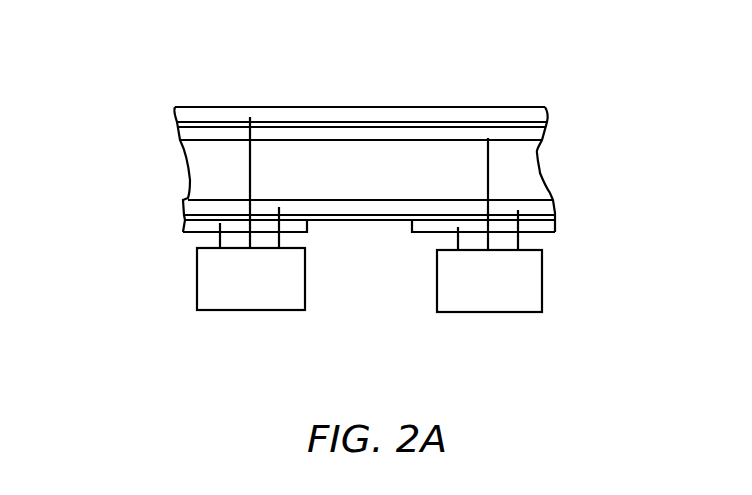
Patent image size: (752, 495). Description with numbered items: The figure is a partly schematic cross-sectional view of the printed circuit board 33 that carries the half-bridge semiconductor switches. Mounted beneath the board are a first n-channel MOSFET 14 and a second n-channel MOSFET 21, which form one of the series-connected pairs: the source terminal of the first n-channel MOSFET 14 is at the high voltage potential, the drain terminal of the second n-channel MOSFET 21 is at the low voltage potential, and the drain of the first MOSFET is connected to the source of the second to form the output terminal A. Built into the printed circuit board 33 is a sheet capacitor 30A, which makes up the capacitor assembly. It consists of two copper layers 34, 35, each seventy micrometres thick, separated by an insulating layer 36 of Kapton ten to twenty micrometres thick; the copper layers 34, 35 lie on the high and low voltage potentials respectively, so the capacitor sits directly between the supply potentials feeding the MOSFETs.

The printed circuit board 33 is at (299, 169).
The sheet capacitor 30A is at (161, 107).
The copper layer 34 is at (411, 90).
The insulating layer 36 is at (412, 122).
The copper layer 35 is at (414, 157).
The output terminal A is at (416, 197).
The first n-channel MOSFET 14 is at (265, 243).
The second n-channel MOSFET 21 is at (505, 254).